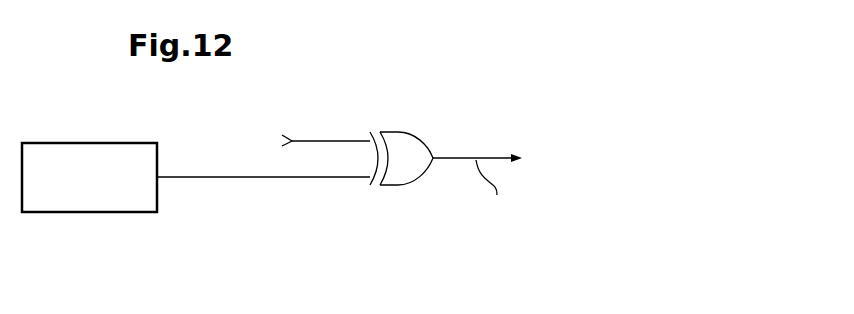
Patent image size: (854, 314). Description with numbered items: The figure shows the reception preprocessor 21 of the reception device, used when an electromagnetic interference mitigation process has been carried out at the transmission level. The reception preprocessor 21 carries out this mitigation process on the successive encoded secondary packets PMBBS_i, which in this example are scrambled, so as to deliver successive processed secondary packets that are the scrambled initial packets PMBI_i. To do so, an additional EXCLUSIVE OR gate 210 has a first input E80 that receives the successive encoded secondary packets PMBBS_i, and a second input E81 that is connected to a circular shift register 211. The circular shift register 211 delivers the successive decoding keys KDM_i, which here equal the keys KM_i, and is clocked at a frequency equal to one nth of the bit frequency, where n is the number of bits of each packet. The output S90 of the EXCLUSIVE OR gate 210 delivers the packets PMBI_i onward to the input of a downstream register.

The reception preprocessor 21 is at (413, 106).
The circular shift register 211 is at (82, 213).
The EXCLUSIVE OR gate 210 is at (424, 179).
The first input E80 is at (363, 140).
The input E81 is at (357, 170).
The output S90 is at (436, 150).